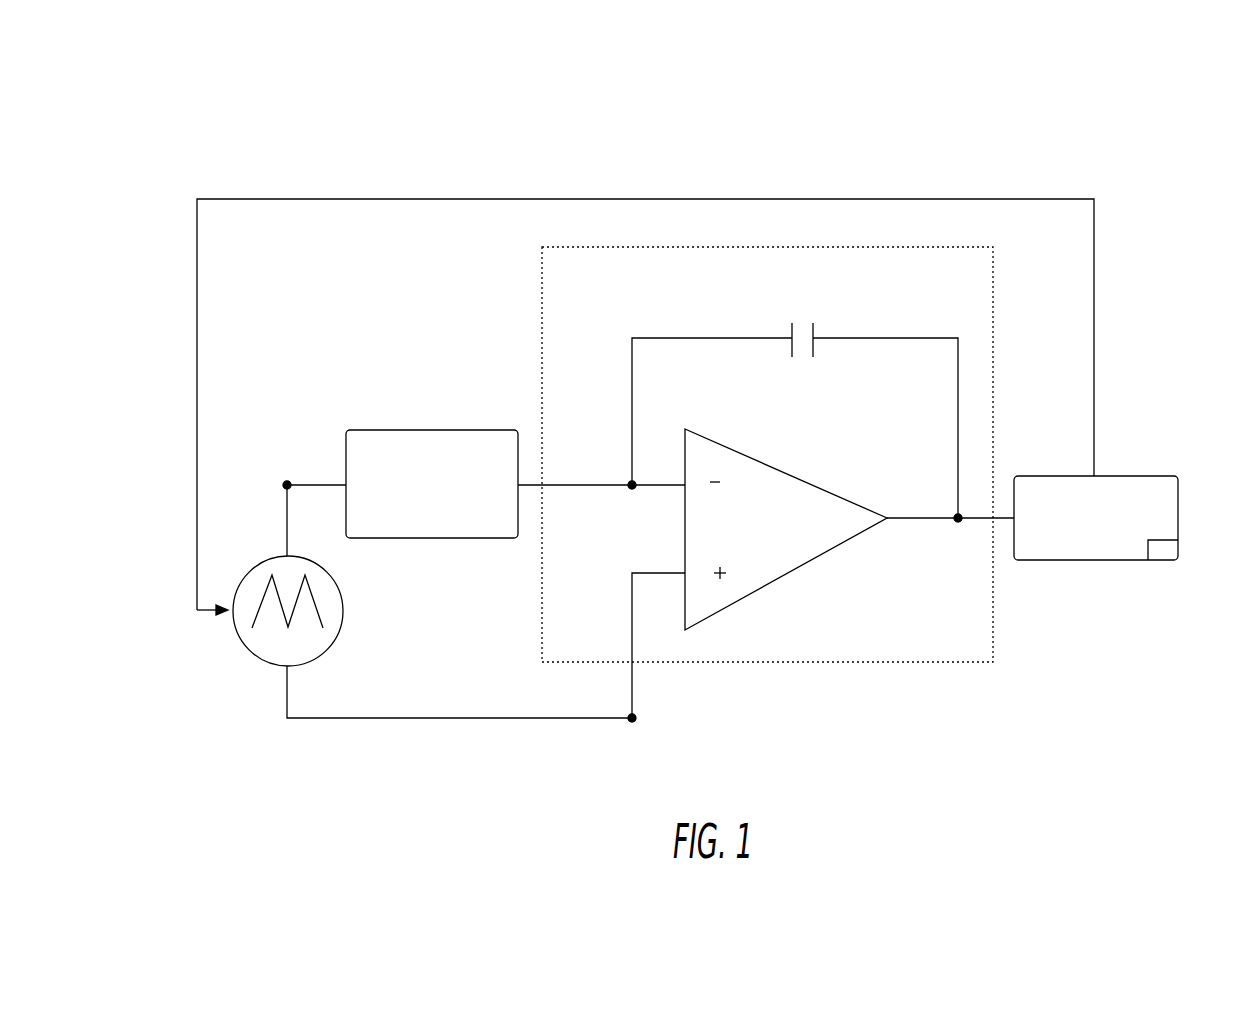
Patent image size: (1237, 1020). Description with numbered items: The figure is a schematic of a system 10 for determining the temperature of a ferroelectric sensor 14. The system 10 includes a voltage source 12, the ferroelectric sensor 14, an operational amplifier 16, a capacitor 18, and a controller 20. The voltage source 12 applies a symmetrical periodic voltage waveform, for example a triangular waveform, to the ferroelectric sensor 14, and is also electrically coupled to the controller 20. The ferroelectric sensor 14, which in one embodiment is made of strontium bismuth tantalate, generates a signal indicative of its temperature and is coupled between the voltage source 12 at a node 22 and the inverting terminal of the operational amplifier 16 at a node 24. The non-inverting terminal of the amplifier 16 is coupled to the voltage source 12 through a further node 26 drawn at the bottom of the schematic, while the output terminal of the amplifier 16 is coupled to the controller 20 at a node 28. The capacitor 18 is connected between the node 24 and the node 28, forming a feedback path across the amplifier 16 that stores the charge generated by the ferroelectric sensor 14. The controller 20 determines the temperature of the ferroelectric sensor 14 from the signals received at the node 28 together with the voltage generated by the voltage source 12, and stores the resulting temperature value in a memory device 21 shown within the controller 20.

The system 10 is at (812, 88).
The voltage source 12 is at (343, 607).
The ferroelectric sensor 14 is at (395, 430).
The operational amplifier 16 is at (780, 468).
The capacitor 18 is at (818, 328).
The controller 20 is at (1143, 473).
The memory device 21 is at (1178, 550).
The node 22 is at (288, 480).
The node 24 is at (634, 482).
The node (non-inverting input) 26 is at (632, 722).
The node 28 is at (956, 522).